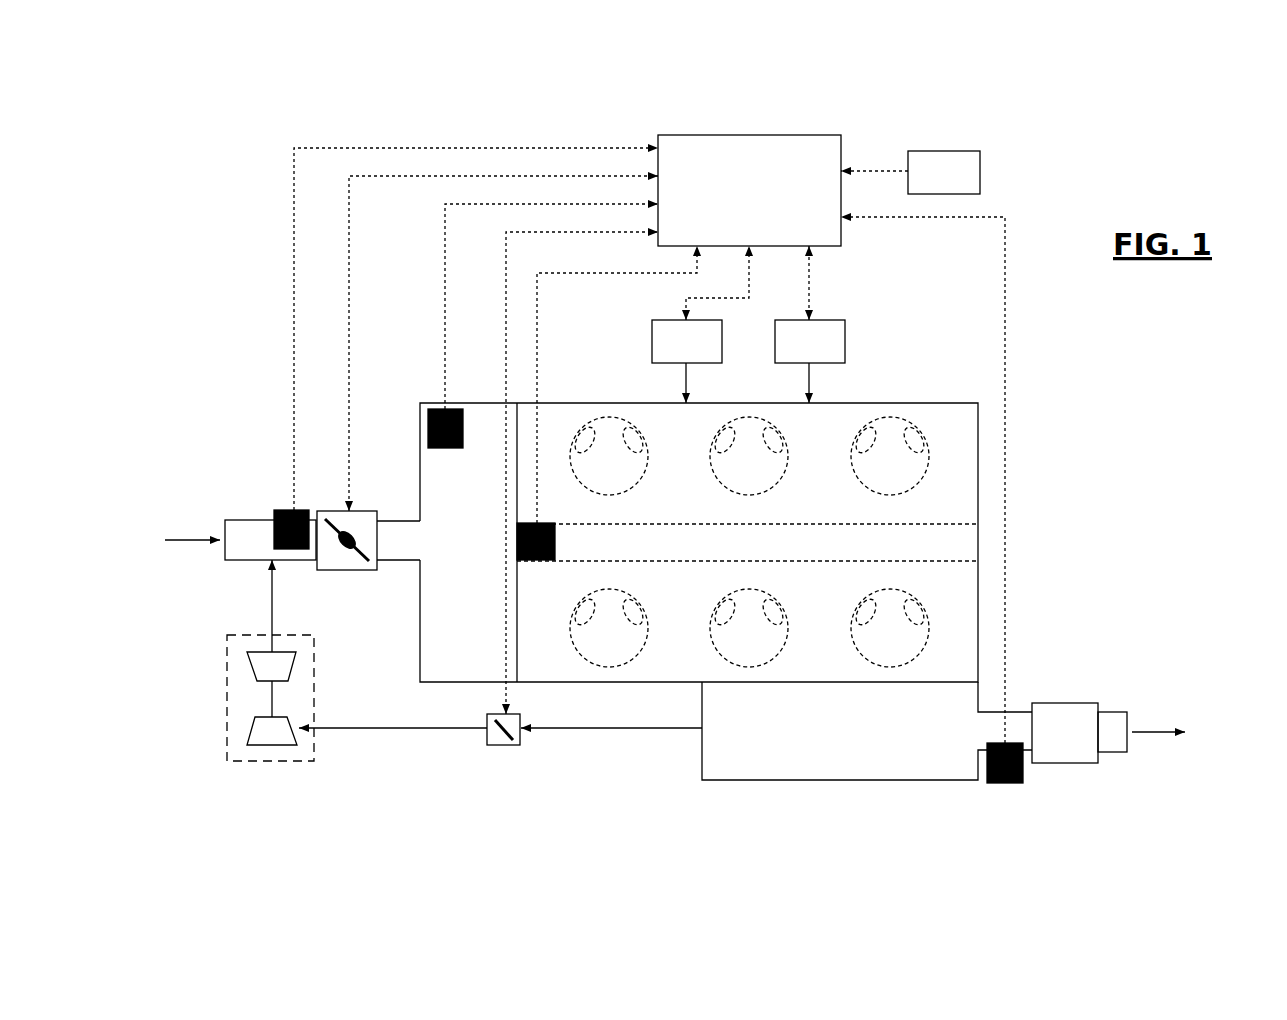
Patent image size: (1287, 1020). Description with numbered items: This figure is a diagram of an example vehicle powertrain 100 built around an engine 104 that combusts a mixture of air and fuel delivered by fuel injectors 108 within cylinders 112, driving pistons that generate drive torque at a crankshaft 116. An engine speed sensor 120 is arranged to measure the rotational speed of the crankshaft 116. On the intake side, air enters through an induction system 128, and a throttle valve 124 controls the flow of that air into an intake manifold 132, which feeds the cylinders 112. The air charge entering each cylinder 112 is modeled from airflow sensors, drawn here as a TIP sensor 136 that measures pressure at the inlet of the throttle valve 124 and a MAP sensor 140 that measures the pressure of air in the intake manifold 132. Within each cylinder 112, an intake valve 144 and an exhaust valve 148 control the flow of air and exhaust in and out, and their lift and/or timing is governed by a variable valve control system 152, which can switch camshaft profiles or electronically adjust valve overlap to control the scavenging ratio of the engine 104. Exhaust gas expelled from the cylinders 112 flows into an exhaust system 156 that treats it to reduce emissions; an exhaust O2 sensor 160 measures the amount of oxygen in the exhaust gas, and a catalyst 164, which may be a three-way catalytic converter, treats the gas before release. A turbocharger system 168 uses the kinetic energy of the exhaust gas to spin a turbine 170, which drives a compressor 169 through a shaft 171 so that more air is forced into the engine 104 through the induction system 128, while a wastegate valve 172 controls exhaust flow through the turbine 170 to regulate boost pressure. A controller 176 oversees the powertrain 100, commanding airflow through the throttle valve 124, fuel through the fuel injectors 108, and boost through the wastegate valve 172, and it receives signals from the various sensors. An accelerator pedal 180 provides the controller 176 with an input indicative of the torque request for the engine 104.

The vehicle powertrain 100 is at (1067, 135).
The engine 104 is at (910, 403).
The fuel injectors 108 is at (652, 340).
The cylinders 112 is at (640, 482).
The crankshaft 116 is at (747, 542).
The engine speed sensor 120 is at (555, 540).
The throttle valve 124 is at (340, 572).
The induction system 128 is at (247, 562).
The intake manifold 132 is at (420, 628).
The TIP sensor 136 is at (274, 525).
The intake manifold absolute pressure (MAP) sensor 140 is at (445, 448).
The intake valve 144 is at (731, 442).
The exhaust valve 148 is at (908, 620).
The variable valve control (VVC) system 152 is at (845, 343).
The exhaust system 156 is at (870, 781).
The exhaust O2 sensor 160 is at (986, 757).
The catalyst 164 is at (1060, 703).
The turbocharger system 168 is at (272, 761).
The compressor 169 is at (250, 666).
The turbine 170 is at (250, 737).
The shaft 171 is at (271, 698).
The wastegate valve 172 is at (500, 745).
The controller 176 is at (748, 135).
The accelerator pedal 180 is at (945, 151).